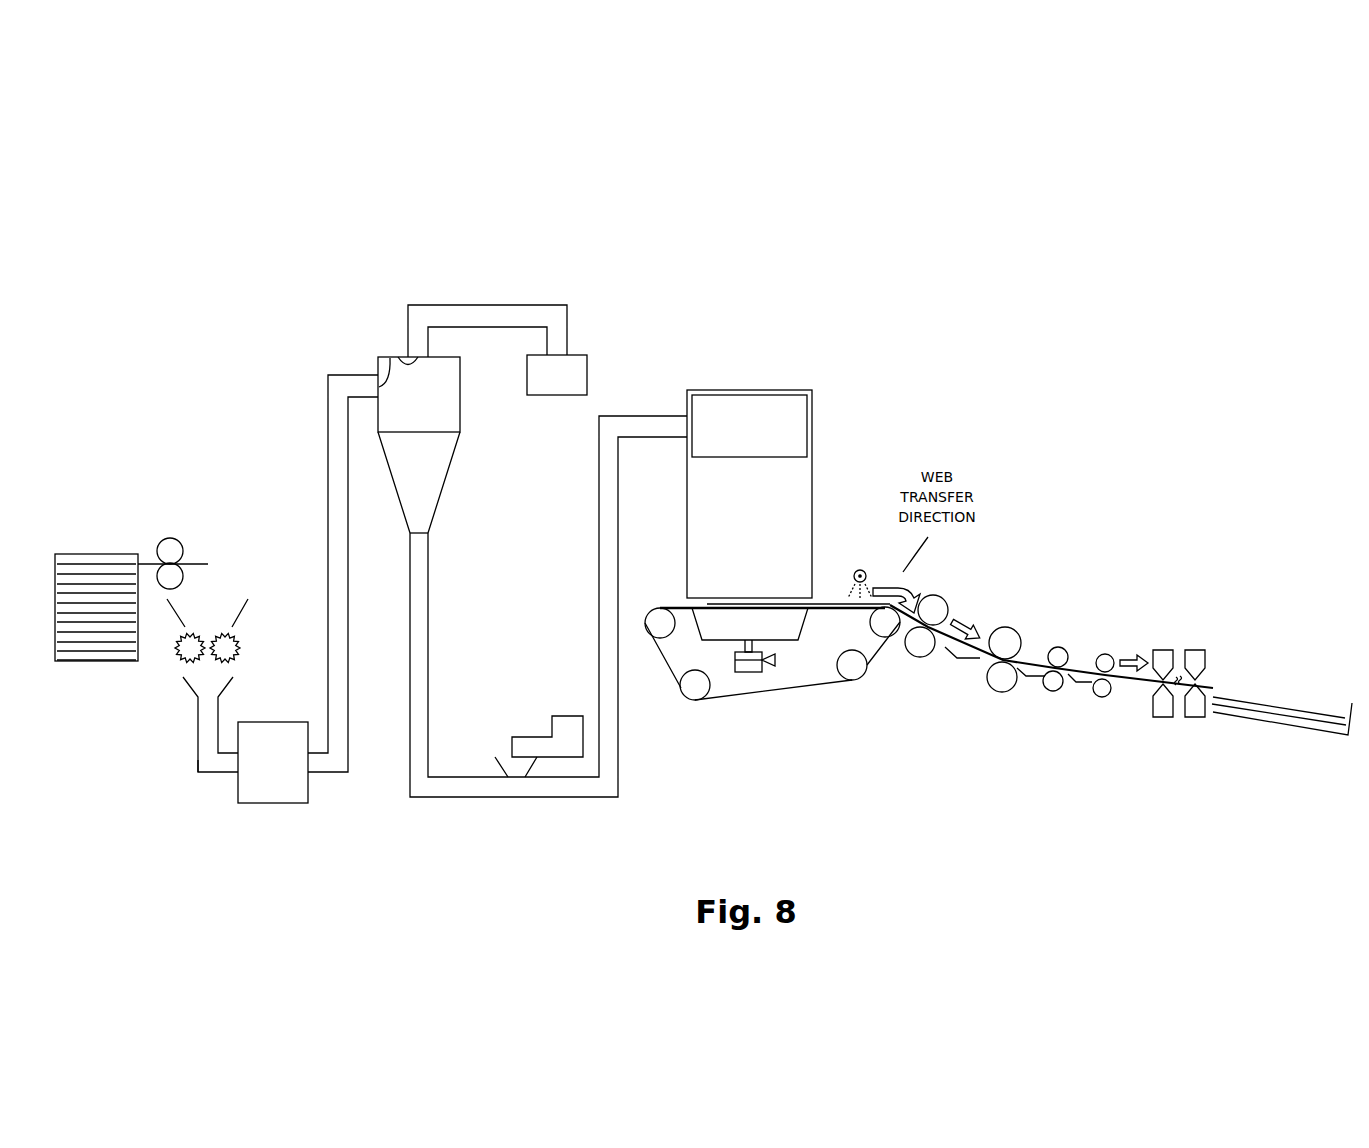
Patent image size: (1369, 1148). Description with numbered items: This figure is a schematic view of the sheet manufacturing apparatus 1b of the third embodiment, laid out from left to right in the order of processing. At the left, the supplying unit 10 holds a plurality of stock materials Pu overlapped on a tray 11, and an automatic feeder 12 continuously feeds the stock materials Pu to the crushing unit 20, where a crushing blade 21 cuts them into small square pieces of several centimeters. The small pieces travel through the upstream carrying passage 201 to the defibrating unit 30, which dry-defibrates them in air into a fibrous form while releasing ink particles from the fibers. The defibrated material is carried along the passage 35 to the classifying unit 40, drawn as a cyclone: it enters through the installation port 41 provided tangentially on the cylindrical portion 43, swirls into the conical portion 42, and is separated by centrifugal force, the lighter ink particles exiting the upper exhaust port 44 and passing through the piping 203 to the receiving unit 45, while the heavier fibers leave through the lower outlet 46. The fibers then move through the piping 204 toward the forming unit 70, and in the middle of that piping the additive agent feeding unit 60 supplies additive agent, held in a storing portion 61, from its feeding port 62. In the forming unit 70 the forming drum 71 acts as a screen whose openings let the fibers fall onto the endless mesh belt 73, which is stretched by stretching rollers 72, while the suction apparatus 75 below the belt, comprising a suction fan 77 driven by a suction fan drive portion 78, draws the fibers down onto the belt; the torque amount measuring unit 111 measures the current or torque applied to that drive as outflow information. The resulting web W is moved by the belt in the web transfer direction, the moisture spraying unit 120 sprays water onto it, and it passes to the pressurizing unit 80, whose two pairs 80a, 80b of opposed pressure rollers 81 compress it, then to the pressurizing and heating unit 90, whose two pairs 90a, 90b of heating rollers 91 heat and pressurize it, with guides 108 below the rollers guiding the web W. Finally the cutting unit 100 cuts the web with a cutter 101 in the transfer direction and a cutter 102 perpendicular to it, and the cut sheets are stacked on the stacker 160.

The sheet manufacturing apparatus 1b is at (702, 275).
The supplying unit 10 is at (100, 552).
The tray 11 is at (75, 663).
The automatic feeder 12 is at (155, 541).
The stock material Pu is at (198, 563).
The crushing unit 20 is at (250, 606).
The crushing blade 21 is at (238, 650).
The upstream carrying passage 201 is at (197, 748).
The defibrating unit 30 is at (272, 716).
The pipe 35 is at (327, 483).
The classifying unit (cyclone) 40 is at (446, 402).
The installation port 41 is at (381, 385).
The conical portion 42 is at (432, 490).
The cylindrical portion 43 is at (452, 400).
The upper exhaust port 44 is at (400, 356).
The receiving unit 45 is at (596, 350).
The lower outlet 46 is at (422, 522).
The piping 203 is at (498, 304).
The piping 204 is at (432, 605).
The additive agent feeding unit 60 is at (524, 716).
The storing portion 61 is at (568, 727).
The feeding port 62 is at (510, 762).
The forming unit 70 is at (779, 463).
The forming drum 71 is at (742, 405).
The stretching rollers 72 is at (660, 616).
The mesh belt 73 is at (832, 682).
The suction apparatus 75 is at (713, 640).
The suction fan 77 is at (735, 660).
The suction fan drive portion 78 is at (750, 670).
The torque amount measuring unit 111 is at (775, 664).
The web W is at (838, 601).
The moisture spraying unit 120 is at (864, 563).
The pressurizing unit 80 is at (1000, 607).
The pressure roller pair 80a is at (987, 550).
The pressure roller pair 80b is at (1049, 550).
The pressure rollers 81 is at (938, 605).
The guides 108 is at (960, 661).
The pressurizing and heating unit 90 is at (1124, 634).
The heating roller pair 90a is at (1105, 600).
The heating roller pair 90b is at (1165, 600).
The heating rollers 91 is at (1060, 648).
The cutting unit 100 is at (1189, 739).
The cutter 101 is at (1161, 724).
The cutter 102 is at (1211, 717).
The stacker 160 is at (1288, 732).